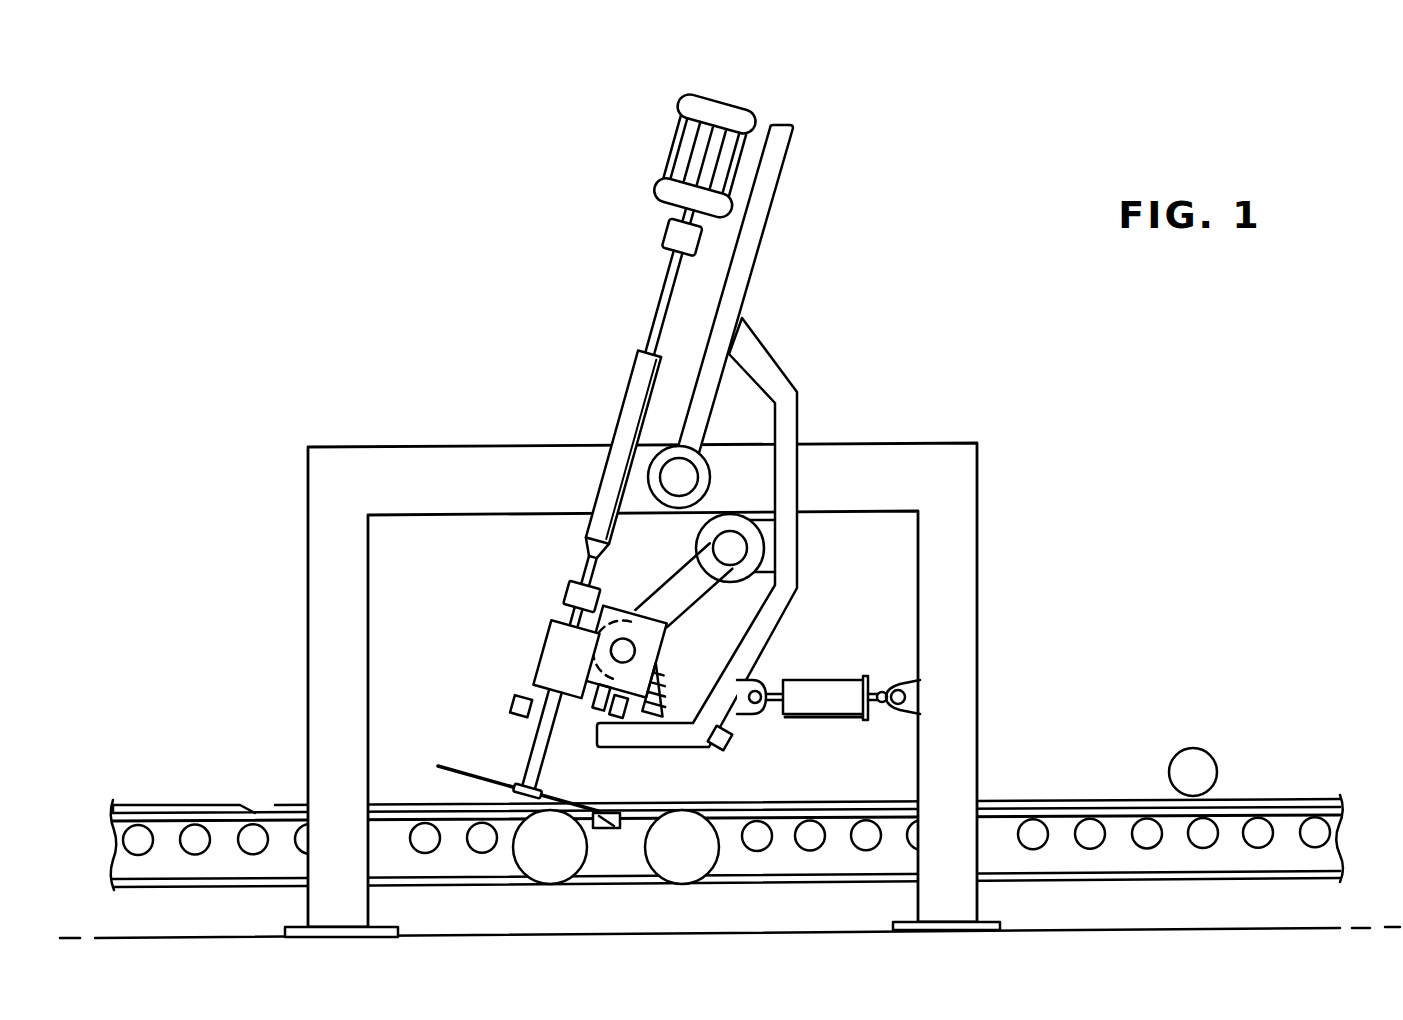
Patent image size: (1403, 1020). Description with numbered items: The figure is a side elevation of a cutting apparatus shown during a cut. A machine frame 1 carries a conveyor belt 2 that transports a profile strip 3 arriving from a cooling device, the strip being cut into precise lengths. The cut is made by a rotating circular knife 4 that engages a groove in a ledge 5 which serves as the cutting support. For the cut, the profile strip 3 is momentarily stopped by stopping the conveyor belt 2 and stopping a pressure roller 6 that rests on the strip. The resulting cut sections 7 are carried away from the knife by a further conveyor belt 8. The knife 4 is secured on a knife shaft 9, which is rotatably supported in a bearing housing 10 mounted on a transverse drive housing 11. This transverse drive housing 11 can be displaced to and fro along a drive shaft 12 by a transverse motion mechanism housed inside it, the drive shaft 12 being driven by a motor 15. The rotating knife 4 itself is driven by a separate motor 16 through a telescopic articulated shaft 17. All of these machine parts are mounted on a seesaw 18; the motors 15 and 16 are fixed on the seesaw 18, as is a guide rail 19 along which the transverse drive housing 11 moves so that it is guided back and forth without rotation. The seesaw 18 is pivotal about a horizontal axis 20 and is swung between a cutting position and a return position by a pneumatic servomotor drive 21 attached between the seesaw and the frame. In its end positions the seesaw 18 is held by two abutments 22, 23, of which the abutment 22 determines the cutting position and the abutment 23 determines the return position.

The machine frame 1 is at (417, 450).
The conveyor belt 2 is at (805, 876).
The profile strip 3 is at (1075, 800).
The rotating circular knife 4 is at (455, 768).
The ledge 5 is at (606, 830).
The pressure roller 6 is at (1200, 765).
The cut sections 7 is at (172, 805).
The conveyor belt 8 is at (165, 883).
The knife shaft 9 is at (530, 745).
The bearing housing 10 is at (553, 650).
The transverse drive housing 11 is at (648, 678).
The drive shaft 12 is at (636, 640).
The motor 15 is at (753, 548).
The motor 16 is at (700, 100).
The articulated shaft 17 is at (630, 402).
The seesaw 18 is at (782, 375).
The guide rail 19 is at (598, 722).
The horizontal axis 20 is at (688, 468).
The pneumatic servomotor drive 21 is at (818, 690).
The abutment 22 is at (735, 742).
The abutment 23 is at (510, 703).